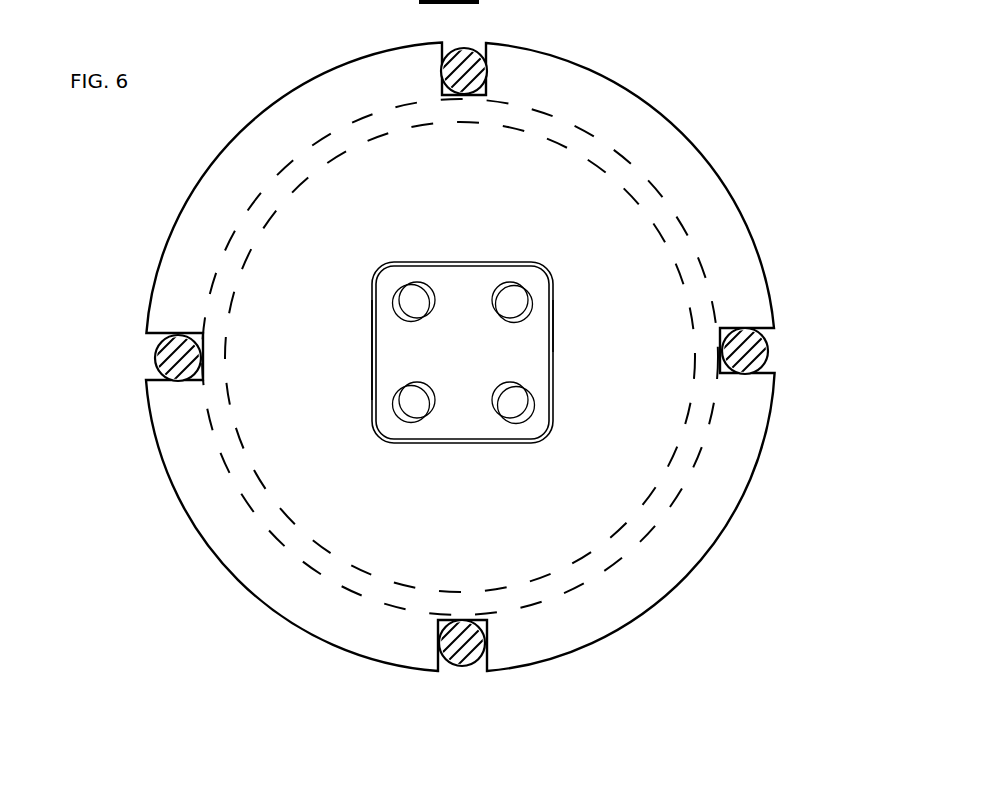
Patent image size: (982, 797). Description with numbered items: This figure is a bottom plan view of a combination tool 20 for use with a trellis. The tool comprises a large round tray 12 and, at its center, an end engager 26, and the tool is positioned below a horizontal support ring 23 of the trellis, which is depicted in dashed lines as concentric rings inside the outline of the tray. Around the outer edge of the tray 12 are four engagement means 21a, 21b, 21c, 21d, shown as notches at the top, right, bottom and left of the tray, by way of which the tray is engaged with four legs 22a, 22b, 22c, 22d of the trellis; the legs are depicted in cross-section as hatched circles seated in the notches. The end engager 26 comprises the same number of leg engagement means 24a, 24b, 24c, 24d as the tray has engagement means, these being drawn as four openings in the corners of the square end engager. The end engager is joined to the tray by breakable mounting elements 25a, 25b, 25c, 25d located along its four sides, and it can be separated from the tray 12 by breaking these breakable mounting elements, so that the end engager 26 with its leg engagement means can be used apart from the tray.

The tray 12 is at (530, 204).
The combination tool 20 is at (172, 200).
The engagement means 21a is at (440, 70).
The engagement means 21b is at (752, 318).
The engagement means 21c is at (488, 650).
The engagement means 21d is at (171, 383).
The leg 22a is at (462, 44).
The leg 22b is at (768, 350).
The leg 22c is at (466, 666).
The leg 22d is at (155, 358).
The horizontal support ring 23 is at (656, 176).
The leg engagement means 24a is at (528, 293).
The leg engagement means 24b is at (533, 424).
The leg engagement means 24c is at (385, 398).
The leg engagement means 24d is at (395, 293).
The breakable mounting element 25a is at (463, 265).
The breakable mounting element 25b is at (553, 347).
The breakable mounting element 25c is at (463, 442).
The breakable mounting element 25d is at (373, 343).
The end engager 26 is at (478, 362).